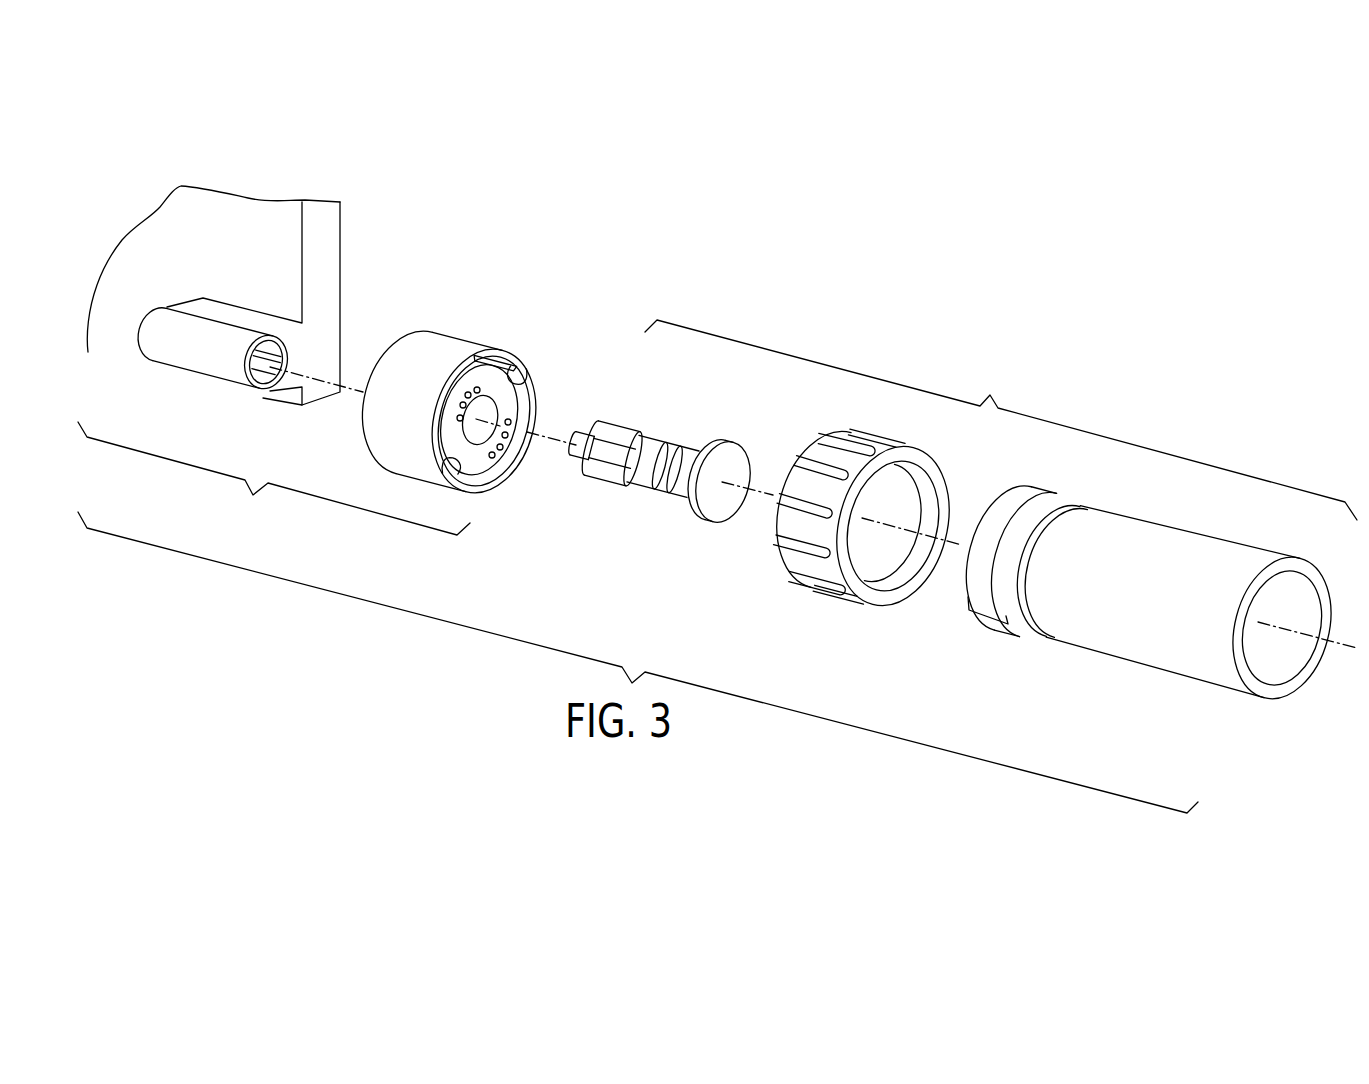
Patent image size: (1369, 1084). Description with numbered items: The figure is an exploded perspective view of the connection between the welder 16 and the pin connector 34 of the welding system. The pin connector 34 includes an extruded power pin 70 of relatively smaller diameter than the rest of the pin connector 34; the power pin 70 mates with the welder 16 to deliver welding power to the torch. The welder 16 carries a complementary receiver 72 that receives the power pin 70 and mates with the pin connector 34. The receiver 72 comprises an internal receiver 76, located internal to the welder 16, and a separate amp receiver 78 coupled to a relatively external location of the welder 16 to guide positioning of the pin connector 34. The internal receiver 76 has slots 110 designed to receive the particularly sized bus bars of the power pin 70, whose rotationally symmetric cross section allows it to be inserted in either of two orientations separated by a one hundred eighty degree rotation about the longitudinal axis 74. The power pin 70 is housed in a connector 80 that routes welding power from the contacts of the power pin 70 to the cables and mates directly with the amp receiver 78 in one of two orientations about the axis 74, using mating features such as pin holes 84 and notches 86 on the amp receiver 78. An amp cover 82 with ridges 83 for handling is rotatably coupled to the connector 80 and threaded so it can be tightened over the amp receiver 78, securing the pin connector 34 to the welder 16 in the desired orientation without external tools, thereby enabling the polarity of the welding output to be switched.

The welder 16 is at (356, 239).
The pin connector 34 is at (717, 566).
The power pin 70 is at (625, 430).
The receiver 72 is at (274, 478).
The longitudinal axis 74 is at (908, 535).
The internal receiver 76 is at (209, 387).
The amp receiver 78 is at (473, 342).
The connector 80 is at (1161, 666).
The amp cover 82 is at (838, 600).
The ridges 83 is at (870, 430).
The pin holes 84 is at (497, 455).
The notches 86 is at (515, 378).
The slots 110 is at (284, 358).